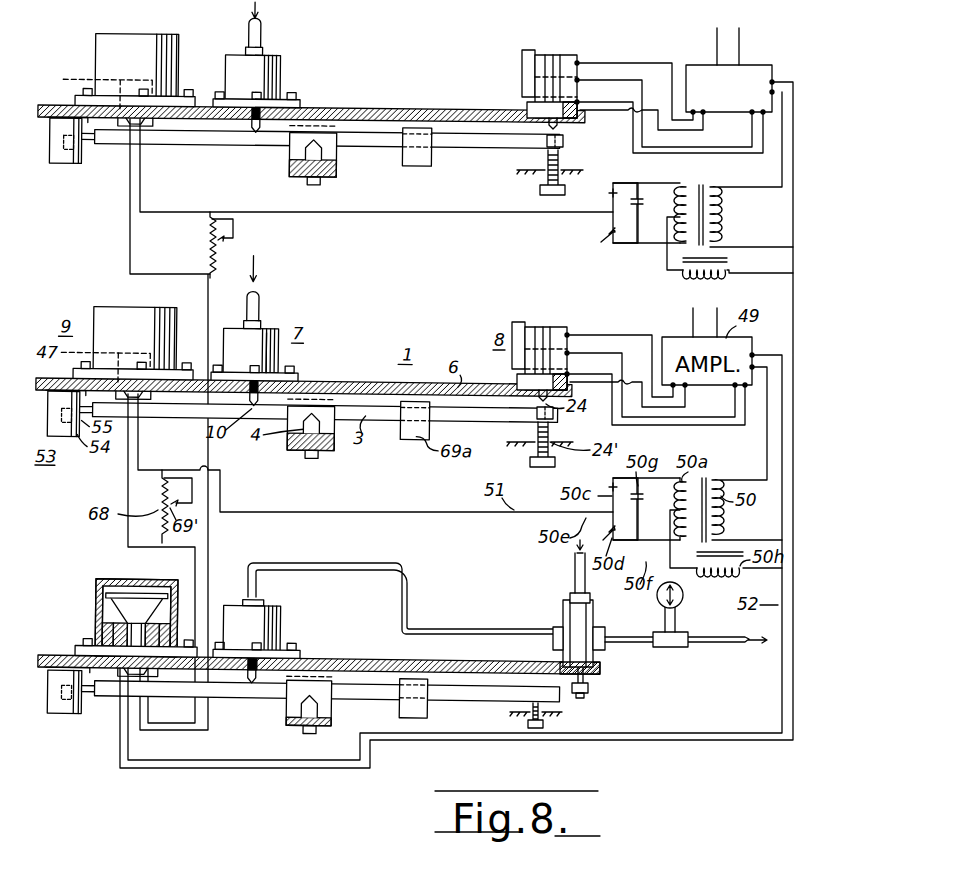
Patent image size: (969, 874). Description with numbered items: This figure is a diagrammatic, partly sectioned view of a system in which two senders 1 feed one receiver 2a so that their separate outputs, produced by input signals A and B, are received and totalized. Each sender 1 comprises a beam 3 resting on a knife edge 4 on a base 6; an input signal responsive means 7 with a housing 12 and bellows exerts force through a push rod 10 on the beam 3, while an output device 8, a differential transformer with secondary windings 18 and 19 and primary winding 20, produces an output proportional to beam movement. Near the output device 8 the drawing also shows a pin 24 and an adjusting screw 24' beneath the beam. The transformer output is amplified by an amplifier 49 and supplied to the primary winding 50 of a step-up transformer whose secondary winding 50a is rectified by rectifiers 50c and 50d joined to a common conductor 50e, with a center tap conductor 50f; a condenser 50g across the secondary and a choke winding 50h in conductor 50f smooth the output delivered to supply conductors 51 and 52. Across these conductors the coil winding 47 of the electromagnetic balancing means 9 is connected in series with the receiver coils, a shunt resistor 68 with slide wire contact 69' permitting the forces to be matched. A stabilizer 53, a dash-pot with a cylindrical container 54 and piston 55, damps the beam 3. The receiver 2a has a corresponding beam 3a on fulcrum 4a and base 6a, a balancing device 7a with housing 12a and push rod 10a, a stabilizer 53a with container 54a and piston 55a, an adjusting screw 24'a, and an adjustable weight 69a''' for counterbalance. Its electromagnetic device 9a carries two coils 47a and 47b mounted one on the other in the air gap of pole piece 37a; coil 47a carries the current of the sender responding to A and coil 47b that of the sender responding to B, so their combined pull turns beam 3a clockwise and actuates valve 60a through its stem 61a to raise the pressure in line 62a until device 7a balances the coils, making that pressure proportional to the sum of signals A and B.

The sending device 1 is at (403, 85).
The receiver 2a is at (372, 615).
The beam 3 is at (326, 156).
The beam of receiver 3a is at (326, 704).
The knife edge 4 is at (294, 155).
The fulcrum of receiver beam 4a is at (294, 706).
The support or base 6 is at (311, 101).
The base of receiver 6a is at (319, 653).
The input signal responsive means 7 is at (260, 63).
The balancing device of receiver 7a is at (263, 628).
The output device 8 is at (507, 86).
The electromagnetic balancing means 9 is at (128, 79).
The electromagnetic device of receiver 9a is at (114, 617).
The push rod 10 is at (233, 137).
The push rod of receiver 10a is at (293, 657).
The housing 12 is at (290, 334).
The housing of receiver balancing device 12a is at (274, 612).
The secondary winding 18 is at (586, 100).
The secondary winding 19 is at (580, 62).
The primary winding 20 is at (588, 80).
The contact pin 24 is at (579, 131).
The adjusting screw 24' is at (567, 172).
The adjusting screw 24'a is at (570, 717).
The pole piece 37a is at (149, 615).
The coil winding 47 is at (95, 90).
The coil 47a is at (206, 604).
The coil 47b is at (67, 625).
The amplifier 49 is at (756, 65).
The primary winding of step-up transformer 50 is at (719, 200).
The secondary winding 50a is at (682, 192).
The rectifier 50c is at (612, 197).
The rectifier 50d is at (608, 240).
The common conductor 50e is at (606, 220).
The center tap conductor 50f is at (668, 272).
The condenser 50g is at (637, 197).
The choke winding 50h is at (728, 268).
The supply conductor 51 is at (512, 213).
The supply conductor 52 is at (793, 289).
The stabilizer 53 is at (48, 181).
The stabilizer of receiver 53a is at (63, 737).
The cylindrical container 54 is at (83, 142).
The container of receiver stabilizer 54a is at (83, 693).
The piston 55 is at (64, 146).
The piston of receiver stabilizer 55a is at (91, 723).
The valve 60a is at (549, 616).
The valve stem 61a is at (570, 580).
The line 62a is at (626, 632).
The shunt resistor 68 is at (210, 244).
The slide wire contact 69' is at (248, 229).
The adjustable weight of receiver 69a''' is at (444, 705).
The input signal A is at (275, 13).
The input signal B is at (271, 272).